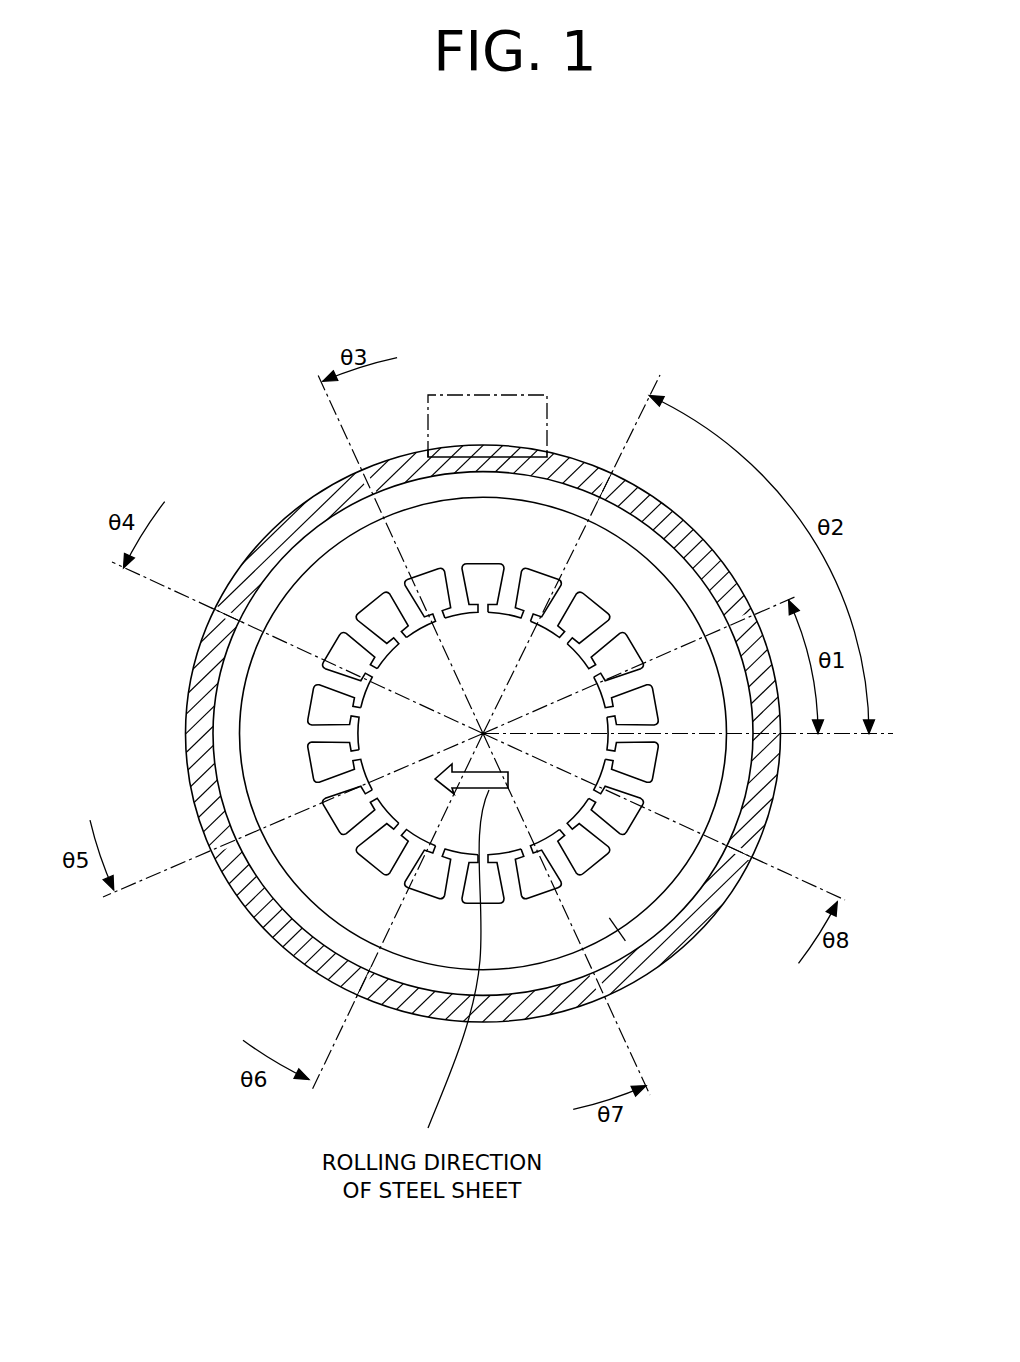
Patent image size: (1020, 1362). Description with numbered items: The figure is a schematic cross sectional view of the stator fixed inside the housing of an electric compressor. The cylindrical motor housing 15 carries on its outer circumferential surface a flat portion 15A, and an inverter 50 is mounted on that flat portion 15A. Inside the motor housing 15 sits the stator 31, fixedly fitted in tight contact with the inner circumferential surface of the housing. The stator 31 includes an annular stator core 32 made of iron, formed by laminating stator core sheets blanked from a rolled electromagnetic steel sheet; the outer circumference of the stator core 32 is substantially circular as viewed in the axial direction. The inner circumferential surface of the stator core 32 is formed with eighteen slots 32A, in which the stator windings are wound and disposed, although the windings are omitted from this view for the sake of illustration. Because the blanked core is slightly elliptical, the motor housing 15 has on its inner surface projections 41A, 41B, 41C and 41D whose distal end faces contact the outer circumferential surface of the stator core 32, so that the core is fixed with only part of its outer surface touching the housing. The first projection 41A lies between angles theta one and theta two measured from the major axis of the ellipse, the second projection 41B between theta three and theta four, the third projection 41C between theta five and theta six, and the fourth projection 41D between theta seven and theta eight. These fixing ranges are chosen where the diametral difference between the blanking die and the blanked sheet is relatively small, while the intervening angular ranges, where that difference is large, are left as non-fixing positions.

The motor housing 15 is at (500, 733).
The flat portion 15A is at (513, 429).
The inverter 50 is at (500, 395).
The stator 31 is at (633, 893).
The stator core 32 is at (636, 956).
The slots 32A is at (497, 781).
The first projection 41A is at (558, 509).
The second projection 41B is at (258, 650).
The third projection 41C is at (401, 957).
The fourth projection 41D is at (711, 817).